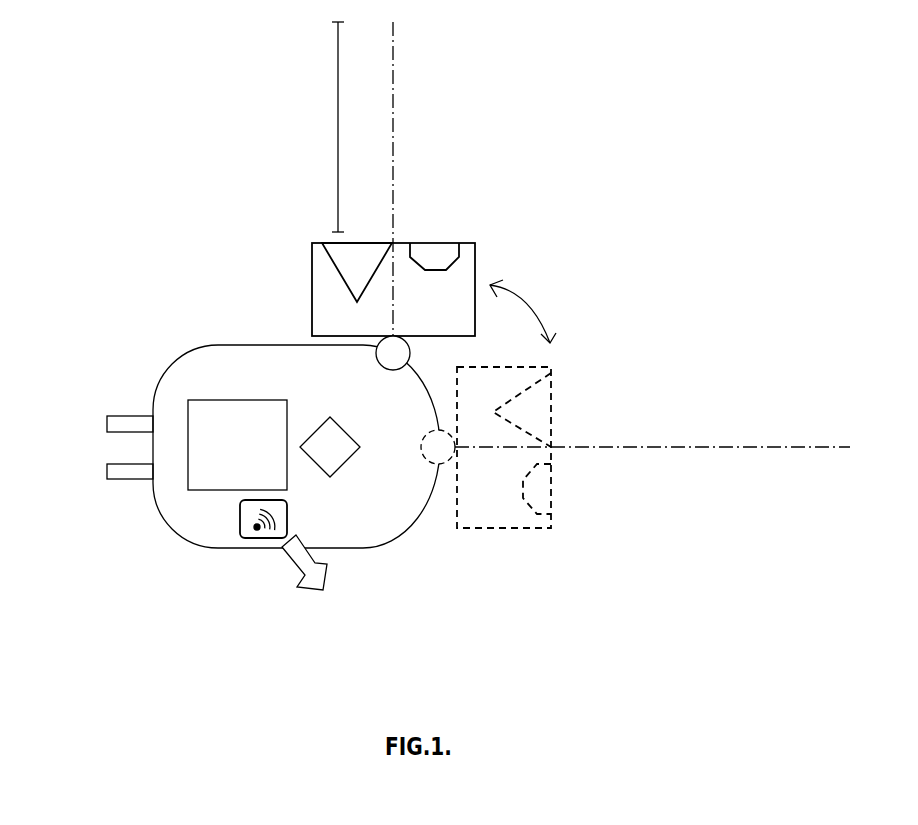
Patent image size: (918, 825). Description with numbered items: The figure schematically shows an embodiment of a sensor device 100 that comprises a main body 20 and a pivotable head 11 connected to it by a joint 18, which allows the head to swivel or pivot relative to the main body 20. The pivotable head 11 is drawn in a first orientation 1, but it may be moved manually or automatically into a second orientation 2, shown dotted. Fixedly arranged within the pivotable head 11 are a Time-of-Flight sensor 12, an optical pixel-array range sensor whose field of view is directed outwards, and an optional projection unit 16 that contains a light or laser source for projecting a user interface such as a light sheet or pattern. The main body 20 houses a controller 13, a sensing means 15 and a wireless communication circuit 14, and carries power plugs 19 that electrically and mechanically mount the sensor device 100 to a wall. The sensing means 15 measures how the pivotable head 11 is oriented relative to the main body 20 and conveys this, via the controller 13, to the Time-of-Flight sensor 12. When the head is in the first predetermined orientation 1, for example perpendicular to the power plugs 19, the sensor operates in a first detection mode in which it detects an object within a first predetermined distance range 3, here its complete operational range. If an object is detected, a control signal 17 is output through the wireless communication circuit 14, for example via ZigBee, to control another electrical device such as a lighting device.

The sensor device 100 is at (128, 172).
The first orientation 1 is at (393, 117).
The second orientation 2 is at (662, 447).
The first predetermined distance range 3 is at (337, 78).
The pivotable head 11 is at (312, 287).
The Time-of-Flight sensor 12 is at (360, 245).
The controller 13 is at (220, 412).
The wireless communication circuit 14 is at (238, 537).
The sensing means 15 is at (330, 460).
The projection unit 16 is at (440, 250).
The control signal 17 is at (297, 562).
The joint 18 is at (385, 360).
The power plugs 19 is at (113, 482).
The main body 20 is at (400, 540).